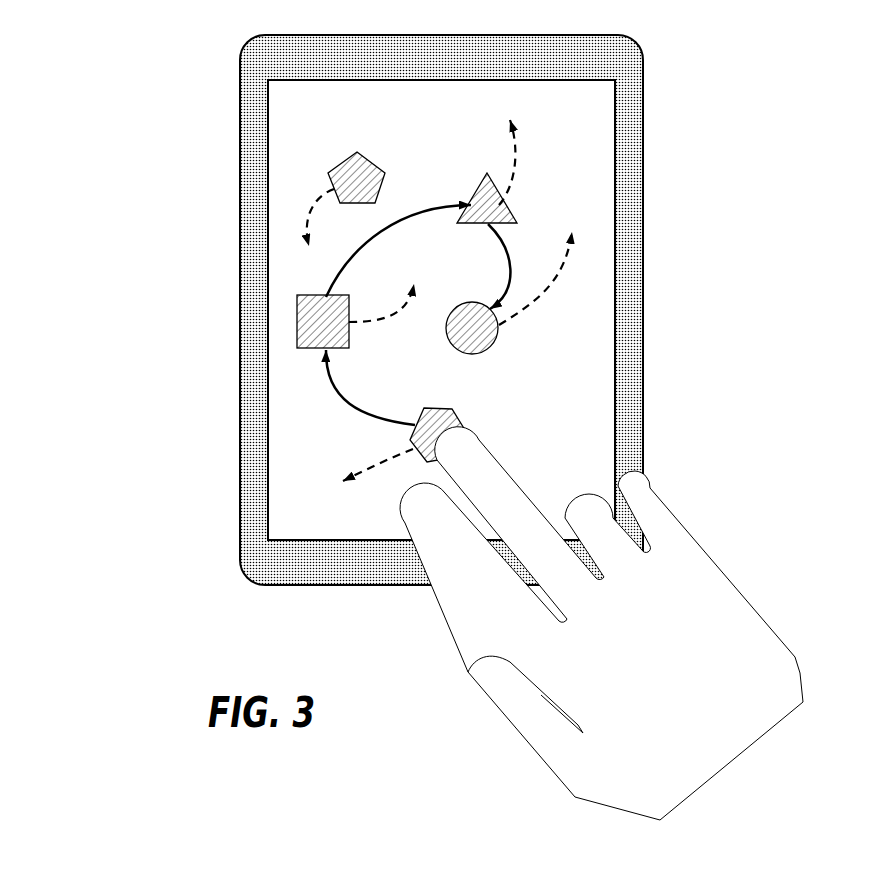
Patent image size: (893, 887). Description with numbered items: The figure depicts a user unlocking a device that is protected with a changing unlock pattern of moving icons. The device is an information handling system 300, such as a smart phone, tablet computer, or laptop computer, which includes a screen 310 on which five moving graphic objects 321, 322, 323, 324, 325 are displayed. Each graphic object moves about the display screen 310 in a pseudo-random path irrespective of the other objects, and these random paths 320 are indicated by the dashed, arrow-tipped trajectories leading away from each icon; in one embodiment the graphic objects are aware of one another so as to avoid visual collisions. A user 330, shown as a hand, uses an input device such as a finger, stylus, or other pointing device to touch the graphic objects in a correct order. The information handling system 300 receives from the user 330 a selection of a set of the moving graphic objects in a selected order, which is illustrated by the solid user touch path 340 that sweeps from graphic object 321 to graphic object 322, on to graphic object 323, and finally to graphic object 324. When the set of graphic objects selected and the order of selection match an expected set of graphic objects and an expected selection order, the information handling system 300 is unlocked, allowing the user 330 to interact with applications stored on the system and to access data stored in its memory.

The information handling system 300 is at (243, 53).
The screen 310 is at (455, 118).
The random paths 320 is at (375, 465).
The moving graphic object 321 is at (450, 428).
The moving graphic object 322 is at (336, 328).
The moving graphic object 323 is at (500, 215).
The moving graphic object 324 is at (485, 334).
The moving graphic object 325 is at (370, 186).
The user 330 is at (672, 678).
The user touch path 340 is at (368, 407).